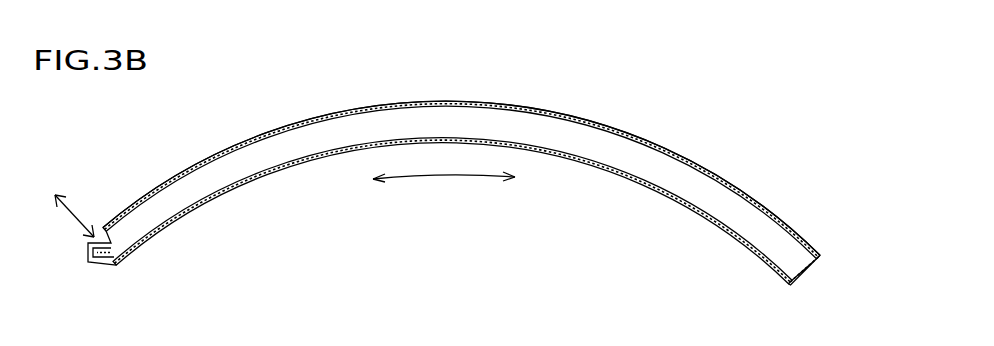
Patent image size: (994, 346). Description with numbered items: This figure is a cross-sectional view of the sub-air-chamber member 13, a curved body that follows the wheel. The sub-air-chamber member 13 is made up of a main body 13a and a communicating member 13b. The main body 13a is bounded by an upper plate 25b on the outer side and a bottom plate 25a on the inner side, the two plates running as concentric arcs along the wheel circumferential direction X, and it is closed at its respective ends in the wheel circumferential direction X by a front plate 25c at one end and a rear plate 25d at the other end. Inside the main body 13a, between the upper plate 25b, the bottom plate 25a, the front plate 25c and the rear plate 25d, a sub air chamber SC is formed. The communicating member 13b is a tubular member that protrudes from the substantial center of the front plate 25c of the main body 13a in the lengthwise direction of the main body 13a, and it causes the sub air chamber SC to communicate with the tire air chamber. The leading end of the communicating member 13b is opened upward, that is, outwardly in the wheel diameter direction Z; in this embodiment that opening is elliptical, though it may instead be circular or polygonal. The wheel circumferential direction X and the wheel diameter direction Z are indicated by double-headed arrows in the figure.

The sub-air-chamber member 13 is at (685, 142).
The main body 13a is at (506, 92).
The communicating member 13b is at (93, 262).
The bottom plate 25a is at (610, 176).
The upper plate 25b is at (612, 131).
The front plate 25c is at (115, 262).
The rear plate 25d is at (806, 274).
The sub air chamber SC is at (287, 148).
The wheel circumferential direction X is at (454, 181).
The wheel diameter direction Z is at (74, 207).